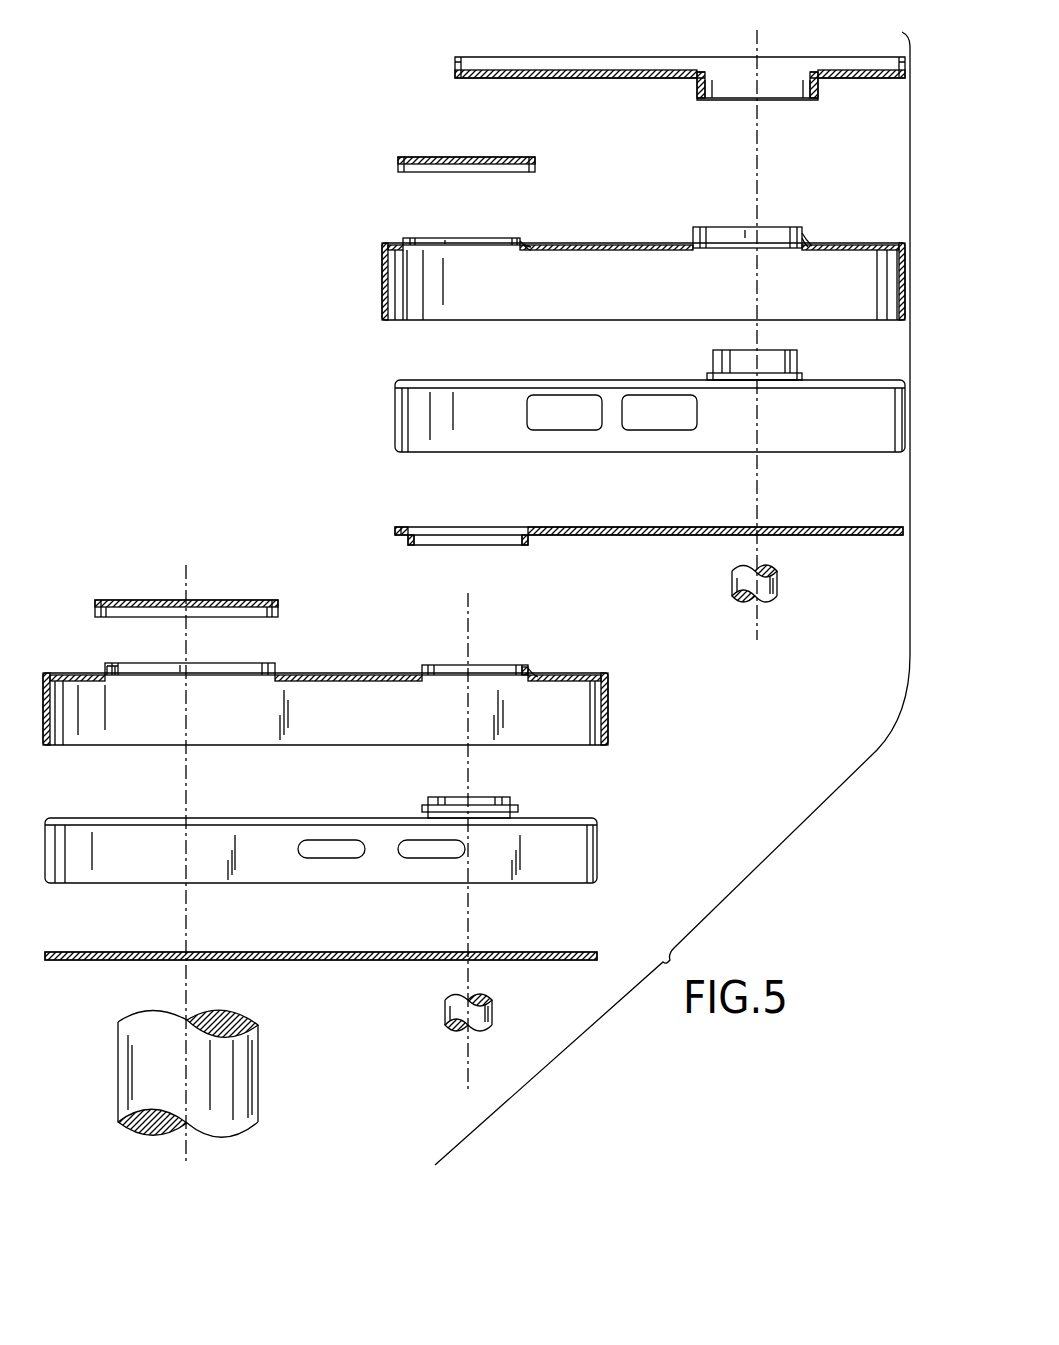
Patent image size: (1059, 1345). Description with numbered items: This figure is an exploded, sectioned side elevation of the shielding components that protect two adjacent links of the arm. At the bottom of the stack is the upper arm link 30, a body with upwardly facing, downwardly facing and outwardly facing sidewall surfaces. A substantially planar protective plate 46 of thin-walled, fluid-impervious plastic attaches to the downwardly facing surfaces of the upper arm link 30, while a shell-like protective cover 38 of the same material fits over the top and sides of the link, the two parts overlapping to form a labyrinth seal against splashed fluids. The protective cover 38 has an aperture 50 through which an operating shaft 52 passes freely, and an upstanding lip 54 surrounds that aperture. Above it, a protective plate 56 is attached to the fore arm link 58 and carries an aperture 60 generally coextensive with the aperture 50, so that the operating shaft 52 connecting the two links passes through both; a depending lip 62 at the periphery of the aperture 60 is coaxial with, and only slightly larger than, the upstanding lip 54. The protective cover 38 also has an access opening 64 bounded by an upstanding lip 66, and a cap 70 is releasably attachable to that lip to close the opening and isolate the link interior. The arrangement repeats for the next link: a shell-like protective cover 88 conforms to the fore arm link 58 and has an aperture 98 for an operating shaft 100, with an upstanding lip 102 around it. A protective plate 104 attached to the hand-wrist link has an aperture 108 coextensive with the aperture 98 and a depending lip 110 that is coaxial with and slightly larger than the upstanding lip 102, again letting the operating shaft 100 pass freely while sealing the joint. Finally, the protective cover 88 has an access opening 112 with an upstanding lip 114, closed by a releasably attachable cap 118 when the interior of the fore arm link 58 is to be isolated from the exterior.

The upper arm link 30 is at (600, 843).
The protective cover 38 is at (358, 687).
The protective plate 46 is at (333, 962).
The aperture 50 is at (525, 676).
The operating shaft 52 is at (493, 1012).
The upstanding lip 54 is at (530, 668).
The protective plate 56 is at (636, 535).
The fore arm link 58 is at (393, 420).
The aperture 60 is at (522, 530).
The depending lip 62 is at (405, 543).
The access opening 64 is at (120, 685).
The upstanding lip 66 is at (276, 668).
The cap 70 is at (277, 600).
The protective cover 88 is at (611, 253).
The aperture 98 is at (700, 235).
The operating shaft 100 is at (778, 588).
The upstanding lip 102 is at (800, 235).
The protective plate 104 is at (498, 86).
The aperture 108 is at (700, 76).
The depending lip 110 is at (697, 90).
The access opening 112 is at (415, 243).
The upstanding lip 114 is at (527, 242).
The cap 118 is at (485, 157).